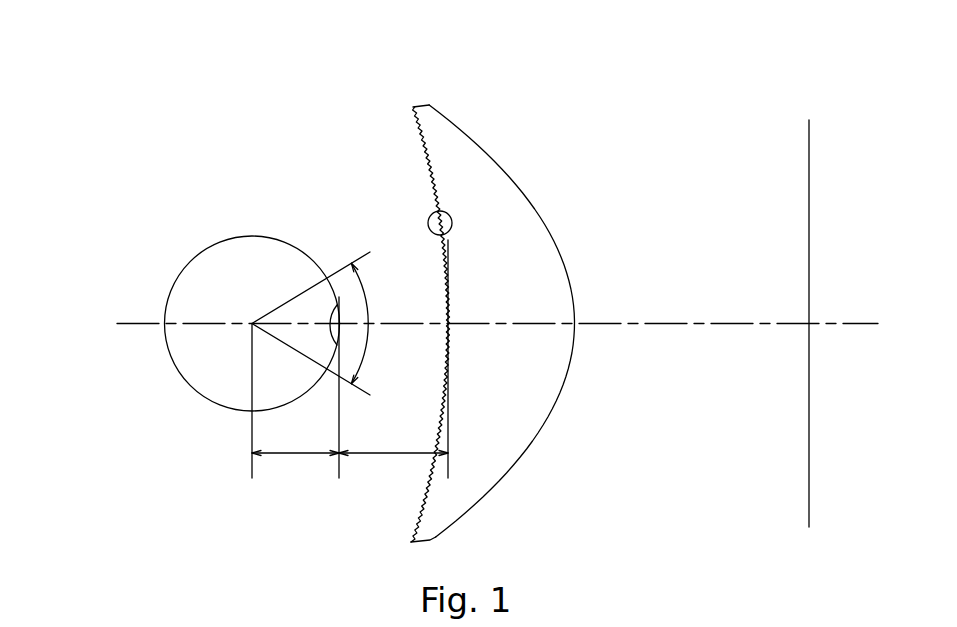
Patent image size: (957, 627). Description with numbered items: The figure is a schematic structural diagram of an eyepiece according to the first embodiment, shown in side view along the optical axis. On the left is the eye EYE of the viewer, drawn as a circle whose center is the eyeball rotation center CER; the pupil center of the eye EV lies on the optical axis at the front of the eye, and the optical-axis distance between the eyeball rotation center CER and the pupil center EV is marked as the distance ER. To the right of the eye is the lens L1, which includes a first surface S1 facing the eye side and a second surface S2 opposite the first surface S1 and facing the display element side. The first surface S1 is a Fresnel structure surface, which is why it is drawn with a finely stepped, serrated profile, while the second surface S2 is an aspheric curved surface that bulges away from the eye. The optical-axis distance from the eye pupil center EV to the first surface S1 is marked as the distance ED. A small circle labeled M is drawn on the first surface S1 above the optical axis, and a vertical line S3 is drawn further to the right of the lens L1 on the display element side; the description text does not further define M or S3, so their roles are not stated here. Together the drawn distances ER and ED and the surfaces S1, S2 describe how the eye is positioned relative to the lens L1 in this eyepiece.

The eye EYE is at (250, 268).
The eyeball rotation center CER is at (252, 324).
The pupil center of the eye EV is at (323, 272).
The lens L1 is at (434, 283).
The first surface S1 is at (424, 167).
The second surface S2 is at (478, 140).
The image display surface S3 is at (809, 165).
The point on first surface of lens M is at (431, 231).
The optical-axis distance between the eyeball rotation center and the pupil center ER is at (295, 387).
The optical-axis distance from the eye pupil center to the first surface ED is at (393, 359).